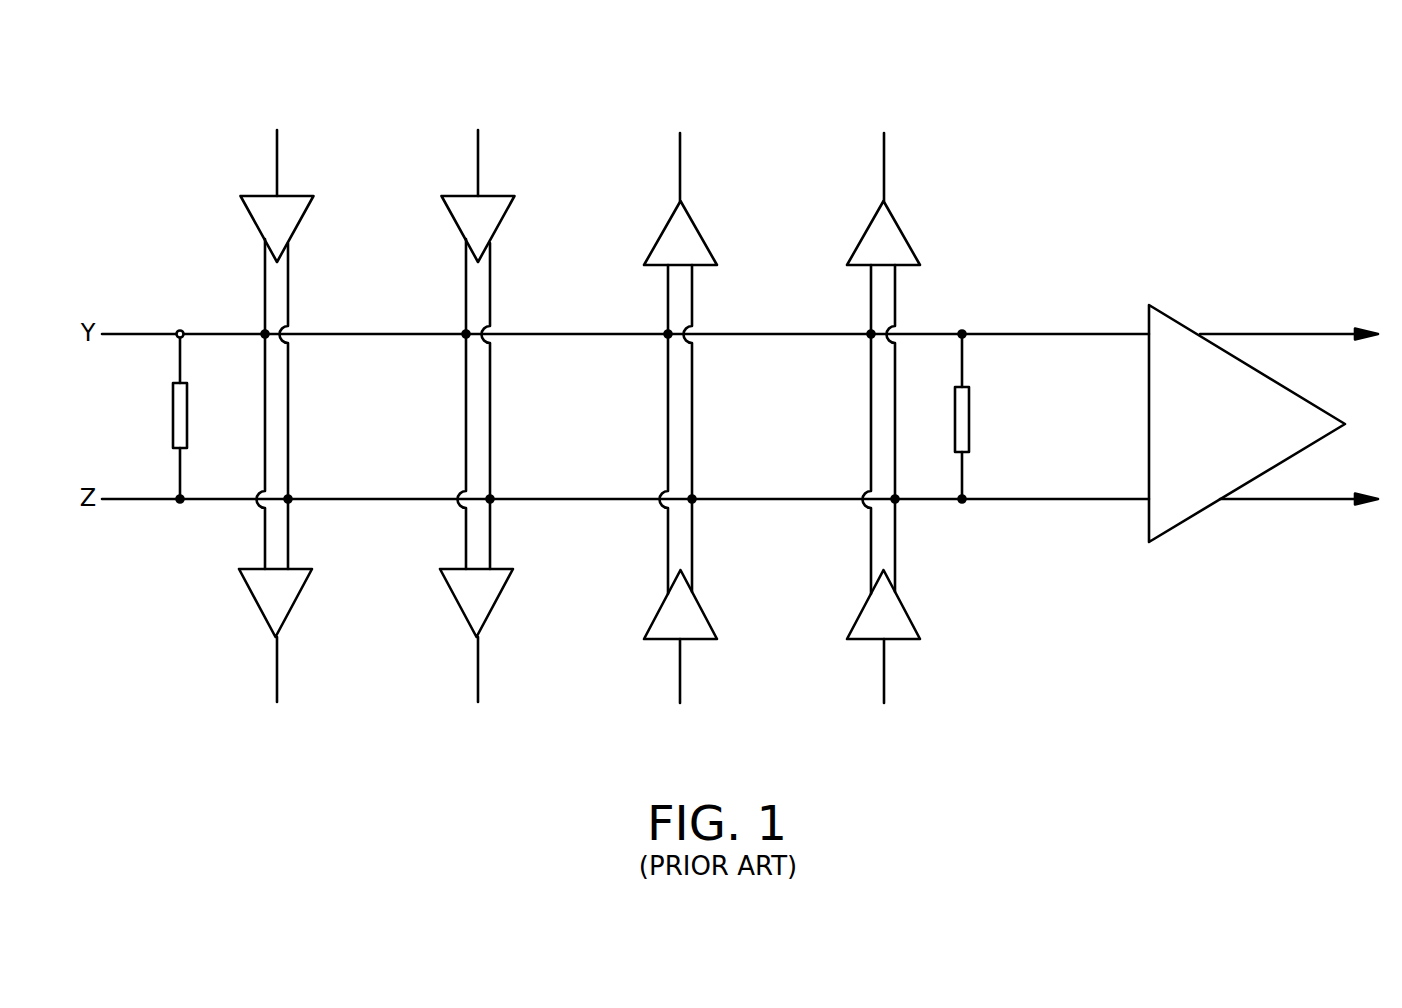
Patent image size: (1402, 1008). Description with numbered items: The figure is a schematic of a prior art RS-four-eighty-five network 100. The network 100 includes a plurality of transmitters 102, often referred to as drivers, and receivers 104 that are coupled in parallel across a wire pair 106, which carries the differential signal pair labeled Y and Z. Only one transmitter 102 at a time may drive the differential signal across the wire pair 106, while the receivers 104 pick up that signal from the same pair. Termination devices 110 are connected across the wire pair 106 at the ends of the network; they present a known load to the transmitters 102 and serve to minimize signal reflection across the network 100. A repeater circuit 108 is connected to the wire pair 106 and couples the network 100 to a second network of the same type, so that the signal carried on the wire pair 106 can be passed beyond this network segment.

The RS-485 network 100 is at (149, 210).
The transmitter 102 is at (304, 215).
The receiver 104 is at (297, 598).
The wire pair 106 is at (1083, 352).
The repeater circuit 108 is at (1172, 319).
The termination device 110 is at (188, 395).